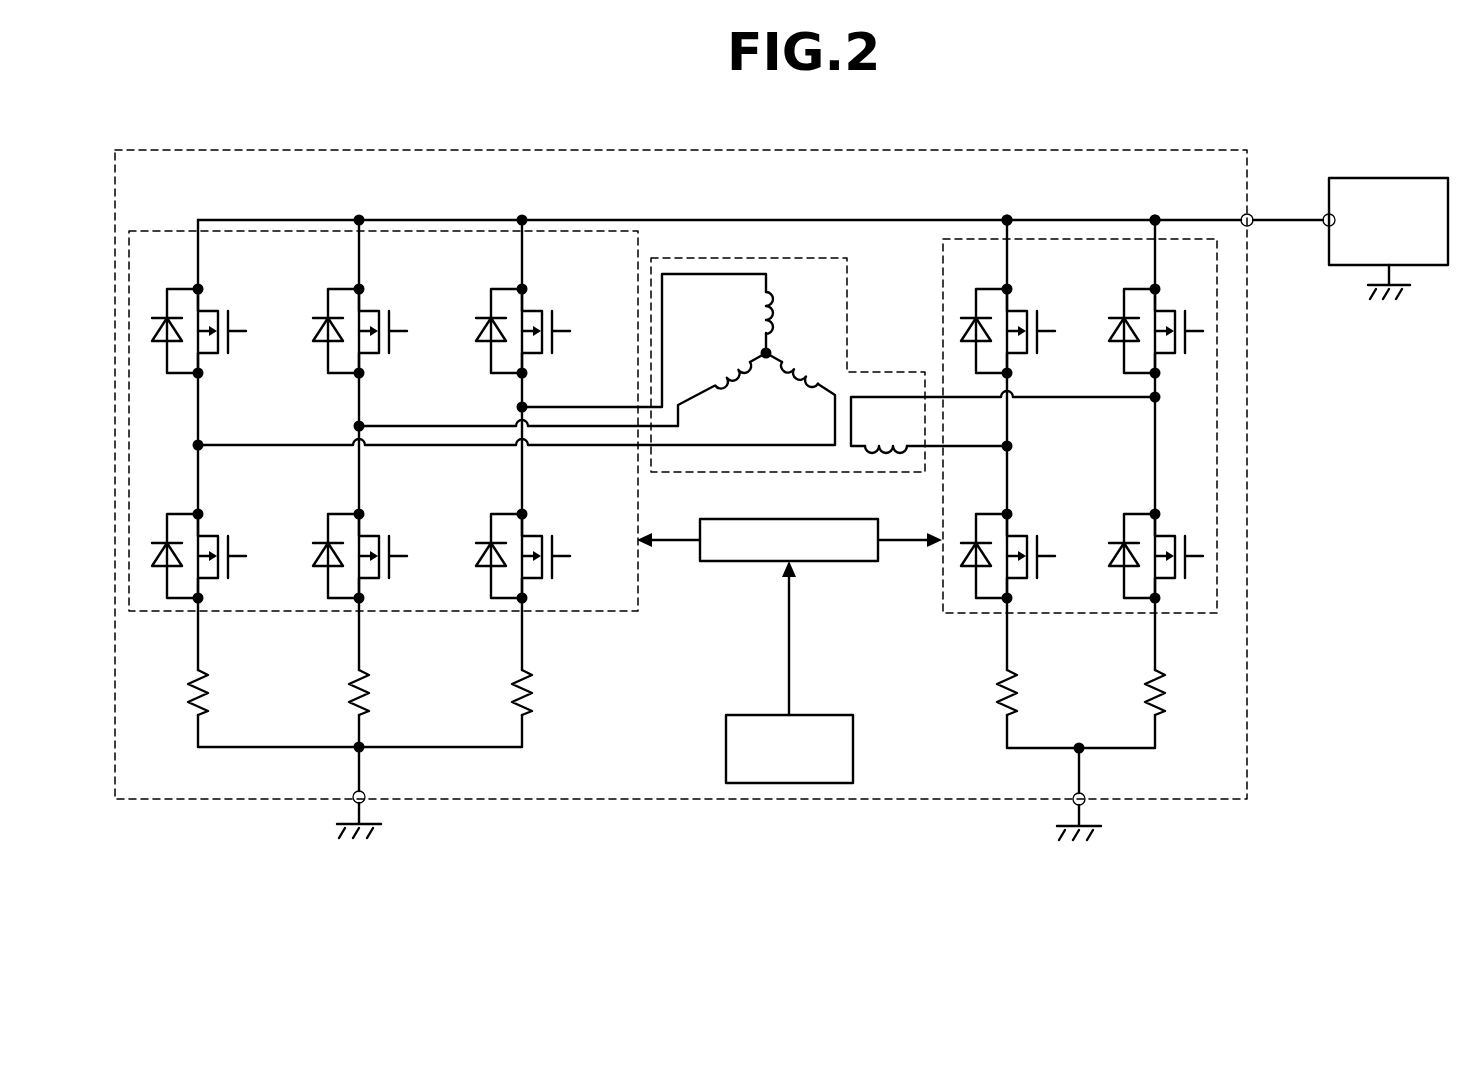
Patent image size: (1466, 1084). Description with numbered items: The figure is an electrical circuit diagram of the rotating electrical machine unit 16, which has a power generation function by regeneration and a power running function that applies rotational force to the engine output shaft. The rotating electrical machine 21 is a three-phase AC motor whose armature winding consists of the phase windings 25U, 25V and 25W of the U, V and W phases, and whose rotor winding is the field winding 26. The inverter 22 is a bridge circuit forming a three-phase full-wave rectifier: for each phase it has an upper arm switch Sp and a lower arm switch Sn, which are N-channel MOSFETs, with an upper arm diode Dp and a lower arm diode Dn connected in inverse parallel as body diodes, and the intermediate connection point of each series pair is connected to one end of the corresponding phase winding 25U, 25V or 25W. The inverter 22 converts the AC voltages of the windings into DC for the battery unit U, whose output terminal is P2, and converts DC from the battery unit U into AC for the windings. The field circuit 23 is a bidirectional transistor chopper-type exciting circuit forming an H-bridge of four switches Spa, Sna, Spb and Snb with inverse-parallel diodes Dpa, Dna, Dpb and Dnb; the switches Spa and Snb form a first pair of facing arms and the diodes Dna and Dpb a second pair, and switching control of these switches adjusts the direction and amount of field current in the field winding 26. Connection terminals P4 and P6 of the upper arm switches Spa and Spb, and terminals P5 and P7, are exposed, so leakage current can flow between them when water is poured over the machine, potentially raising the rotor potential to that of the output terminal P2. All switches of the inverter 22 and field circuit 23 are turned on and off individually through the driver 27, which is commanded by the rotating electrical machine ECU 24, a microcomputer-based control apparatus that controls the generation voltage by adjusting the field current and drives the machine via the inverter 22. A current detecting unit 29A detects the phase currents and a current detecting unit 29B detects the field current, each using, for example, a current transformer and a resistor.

The rotating electrical machine unit 16 is at (1040, 150).
The inverter 22 is at (635, 214).
The field circuit 23 is at (1167, 215).
The rotating electrical machine 21 is at (849, 290).
The U-phase winding 25U is at (760, 313).
The V-phase winding 25V is at (795, 392).
The W-phase winding 25W is at (728, 392).
The field winding 26 is at (905, 458).
The driver 27 is at (815, 518).
The rotating electrical machine ECU 24 is at (815, 714).
The current detecting unit 29A is at (209, 700).
The current detecting unit 29B is at (1018, 700).
The output terminal P2 is at (1322, 217).
The connection terminal P4 is at (1005, 218).
The connection terminal P5 is at (1012, 446).
The connection terminal P6 is at (1153, 218).
The connection terminal P7 is at (1158, 400).
The battery unit U is at (1437, 178).
The upper arm diode Dp is at (158, 317).
The upper arm switch Sp is at (210, 311).
The lower arm diode Dn is at (158, 542).
The lower arm switch Sn is at (210, 536).
The upper arm diode Dpa is at (967, 317).
The upper arm switch Spa is at (1019, 311).
The upper arm diode Dpb is at (1115, 317).
The upper arm switch Spb is at (1167, 311).
The lower arm diode Dna is at (967, 542).
The lower arm switch Sna is at (1019, 536).
The lower arm diode Dnb is at (1115, 542).
The lower arm switch Snb is at (1167, 536).